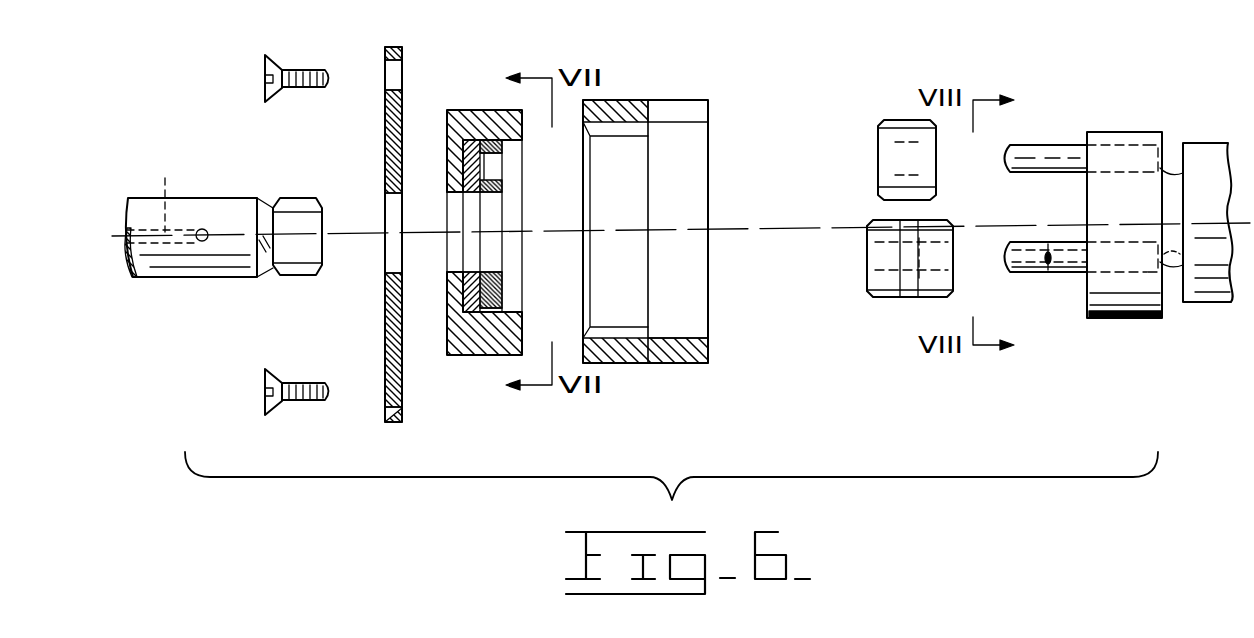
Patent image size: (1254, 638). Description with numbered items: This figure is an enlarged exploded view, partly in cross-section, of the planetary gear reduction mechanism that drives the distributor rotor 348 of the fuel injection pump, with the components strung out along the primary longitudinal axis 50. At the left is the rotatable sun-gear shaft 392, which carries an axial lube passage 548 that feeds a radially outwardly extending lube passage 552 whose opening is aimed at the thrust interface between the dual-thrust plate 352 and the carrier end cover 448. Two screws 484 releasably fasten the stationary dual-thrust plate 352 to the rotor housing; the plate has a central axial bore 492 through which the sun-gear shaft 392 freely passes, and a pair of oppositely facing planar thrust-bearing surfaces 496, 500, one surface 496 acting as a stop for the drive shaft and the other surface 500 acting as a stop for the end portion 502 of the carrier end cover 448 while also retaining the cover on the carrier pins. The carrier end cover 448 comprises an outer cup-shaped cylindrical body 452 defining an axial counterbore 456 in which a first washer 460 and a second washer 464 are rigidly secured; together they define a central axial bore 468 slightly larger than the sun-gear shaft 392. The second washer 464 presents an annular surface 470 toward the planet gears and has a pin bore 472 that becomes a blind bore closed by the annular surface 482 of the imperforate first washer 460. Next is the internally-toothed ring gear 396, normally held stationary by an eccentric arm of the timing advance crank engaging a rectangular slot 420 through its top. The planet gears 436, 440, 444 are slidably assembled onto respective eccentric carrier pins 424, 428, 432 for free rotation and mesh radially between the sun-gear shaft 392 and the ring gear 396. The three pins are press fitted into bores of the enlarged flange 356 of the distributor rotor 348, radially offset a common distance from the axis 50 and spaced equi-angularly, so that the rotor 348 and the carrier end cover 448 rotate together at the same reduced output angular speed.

The primary longitudinal axis 50 is at (117, 240).
The distributor rotor 348 is at (1213, 303).
The dual-thrust plate 352 is at (397, 423).
The flange 356 is at (1113, 302).
The sun-gear shaft 392 is at (207, 278).
The ring gear 396 is at (675, 234).
The rectangular slot 420 is at (648, 112).
The eccentric carrier pin 424 is at (1030, 147).
The eccentric carrier pin 428 is at (1031, 286).
The eccentric carrier pin 432 is at (1068, 272).
The planet gear 436 is at (905, 122).
The planet gear 440 is at (885, 280).
The planet gear 444 is at (850, 278).
The carrier end cover 448 is at (498, 226).
The cylindrical body 452 is at (505, 110).
The axial counterbore 456 is at (522, 300).
The first washer 460 is at (462, 298).
The second washer 464 is at (510, 303).
The central axial bore 468 is at (462, 195).
The annular surface 470 is at (497, 283).
The pin bore 472 is at (495, 150).
The annular surface 482 is at (510, 162).
The screws 484 is at (288, 70).
The central axial bore 492 is at (385, 196).
The thrust-bearing surface 496 is at (385, 110).
The thrust-bearing surface 500 is at (402, 95).
The end portion 502 is at (447, 115).
The axial lube passage 548 is at (166, 177).
The radially outwardly extending lube passage 552 is at (201, 230).